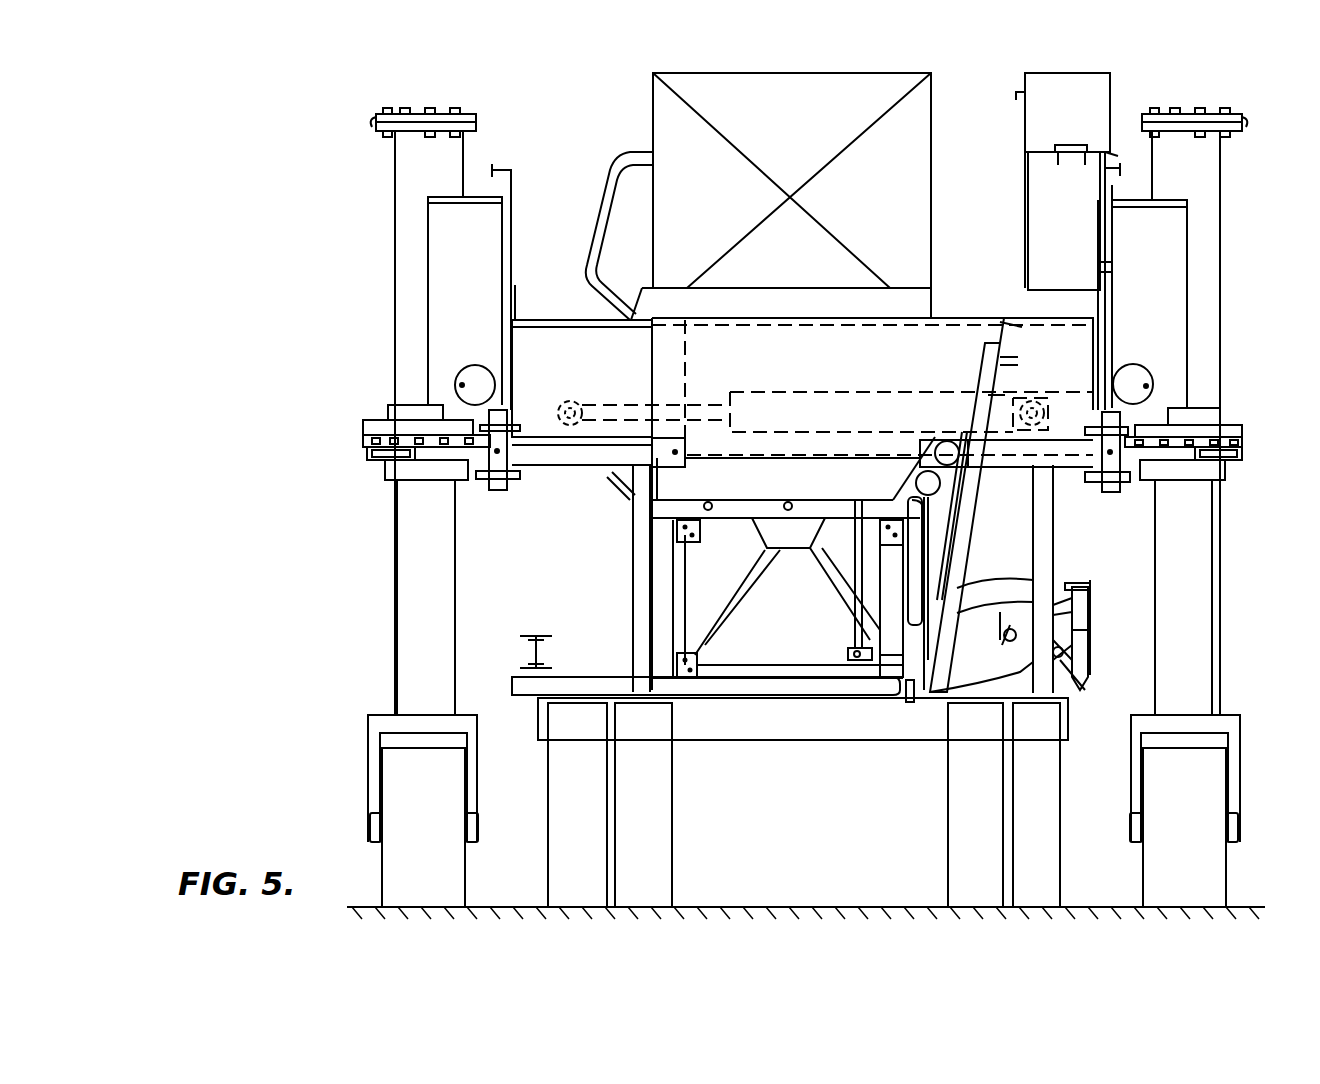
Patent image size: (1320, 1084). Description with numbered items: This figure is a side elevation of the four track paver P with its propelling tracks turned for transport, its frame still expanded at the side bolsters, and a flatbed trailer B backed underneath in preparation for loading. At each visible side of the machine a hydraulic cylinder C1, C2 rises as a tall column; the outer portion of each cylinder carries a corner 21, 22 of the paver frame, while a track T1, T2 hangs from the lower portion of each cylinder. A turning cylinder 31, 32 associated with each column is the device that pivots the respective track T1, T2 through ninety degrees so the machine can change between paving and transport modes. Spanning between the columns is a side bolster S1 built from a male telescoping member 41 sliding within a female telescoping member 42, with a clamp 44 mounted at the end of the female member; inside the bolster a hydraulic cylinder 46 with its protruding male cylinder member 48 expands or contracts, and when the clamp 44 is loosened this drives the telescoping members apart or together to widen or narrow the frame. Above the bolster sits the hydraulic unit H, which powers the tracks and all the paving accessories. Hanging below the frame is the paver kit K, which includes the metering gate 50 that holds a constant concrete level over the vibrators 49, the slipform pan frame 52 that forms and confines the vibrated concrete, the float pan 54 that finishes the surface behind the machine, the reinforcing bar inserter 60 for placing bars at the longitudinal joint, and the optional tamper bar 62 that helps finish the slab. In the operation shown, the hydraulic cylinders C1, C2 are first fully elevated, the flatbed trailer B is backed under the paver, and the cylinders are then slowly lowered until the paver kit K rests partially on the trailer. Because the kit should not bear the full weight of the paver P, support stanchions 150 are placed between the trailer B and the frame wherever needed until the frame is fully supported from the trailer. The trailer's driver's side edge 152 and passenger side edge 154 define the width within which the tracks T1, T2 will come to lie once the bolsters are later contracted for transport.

The four track paver P is at (1232, 92).
The hydraulic cylinder C1 is at (395, 238).
The hydraulic cylinder C2 is at (1221, 222).
The hydraulic unit H is at (795, 131).
The male telescoping member 41 is at (594, 371).
The female telescoping member 42 is at (742, 371).
The clamp 44 is at (673, 338).
The hydraulic cylinder 46 is at (848, 412).
The male cylinder member 48 is at (583, 402).
The side bolster S1 is at (828, 368).
The corner 21 is at (367, 455).
The corner 22 is at (1245, 446).
The turning cylinder 31 is at (550, 455).
The turning cylinder 32 is at (1072, 465).
The metering gate 50 is at (1010, 582).
The reinforcing bar inserter 60 is at (975, 488).
The support stanchion 150 is at (633, 543).
The paver kit K is at (673, 582).
The slipform pan frame 52 is at (797, 680).
The tamper bar 62 is at (912, 600).
The vibrator 49 is at (962, 688).
The float pan 54 is at (604, 690).
The flatbed trailer B is at (722, 742).
The driver's side edge 152 is at (533, 824).
The passenger side edge 154 is at (1113, 824).
The track T1 is at (368, 806).
The track T2 is at (1240, 806).